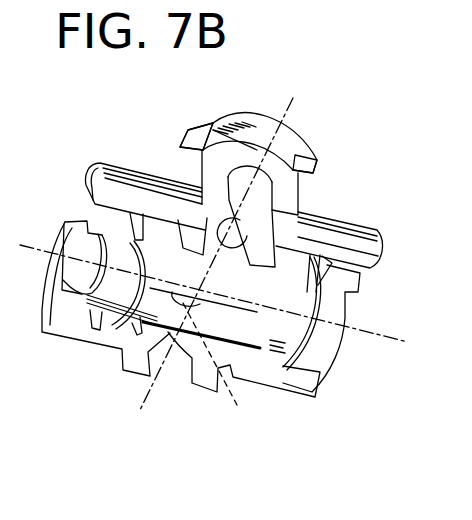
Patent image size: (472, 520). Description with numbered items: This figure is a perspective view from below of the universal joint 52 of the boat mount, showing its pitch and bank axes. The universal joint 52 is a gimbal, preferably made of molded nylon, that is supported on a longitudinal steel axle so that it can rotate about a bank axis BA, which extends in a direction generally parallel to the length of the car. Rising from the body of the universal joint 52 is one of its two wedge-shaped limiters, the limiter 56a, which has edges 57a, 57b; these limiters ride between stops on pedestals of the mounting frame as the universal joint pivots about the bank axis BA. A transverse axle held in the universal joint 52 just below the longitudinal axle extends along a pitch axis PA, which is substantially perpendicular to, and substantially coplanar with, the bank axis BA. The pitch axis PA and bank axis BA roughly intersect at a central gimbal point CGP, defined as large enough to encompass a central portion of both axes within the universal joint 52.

The universal joint 52 is at (193, 182).
The wedge-shaped limiter 56a is at (230, 122).
The edge 57a is at (193, 137).
The edge 57b is at (308, 167).
The bank axis BA is at (296, 112).
The pitch axis PA is at (397, 333).
The central gimbal point CGP is at (220, 373).